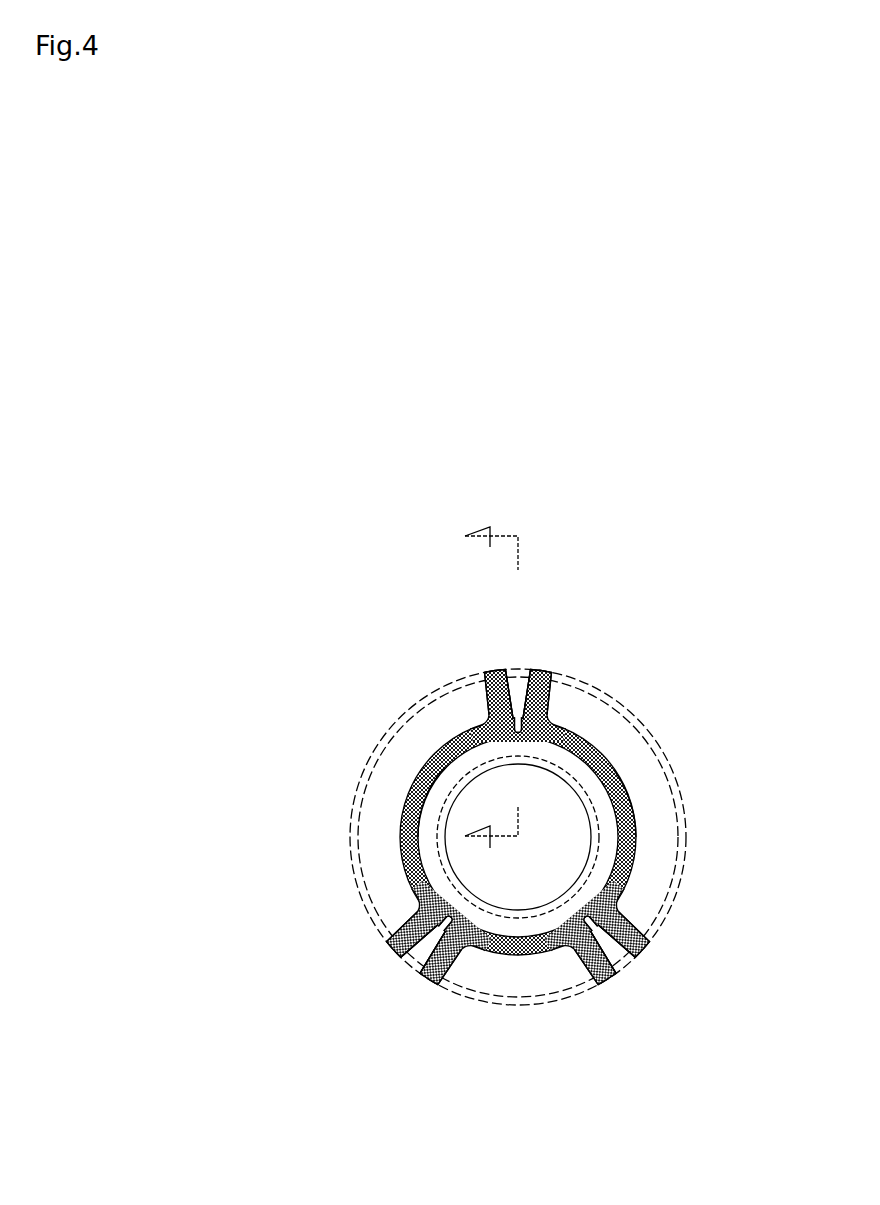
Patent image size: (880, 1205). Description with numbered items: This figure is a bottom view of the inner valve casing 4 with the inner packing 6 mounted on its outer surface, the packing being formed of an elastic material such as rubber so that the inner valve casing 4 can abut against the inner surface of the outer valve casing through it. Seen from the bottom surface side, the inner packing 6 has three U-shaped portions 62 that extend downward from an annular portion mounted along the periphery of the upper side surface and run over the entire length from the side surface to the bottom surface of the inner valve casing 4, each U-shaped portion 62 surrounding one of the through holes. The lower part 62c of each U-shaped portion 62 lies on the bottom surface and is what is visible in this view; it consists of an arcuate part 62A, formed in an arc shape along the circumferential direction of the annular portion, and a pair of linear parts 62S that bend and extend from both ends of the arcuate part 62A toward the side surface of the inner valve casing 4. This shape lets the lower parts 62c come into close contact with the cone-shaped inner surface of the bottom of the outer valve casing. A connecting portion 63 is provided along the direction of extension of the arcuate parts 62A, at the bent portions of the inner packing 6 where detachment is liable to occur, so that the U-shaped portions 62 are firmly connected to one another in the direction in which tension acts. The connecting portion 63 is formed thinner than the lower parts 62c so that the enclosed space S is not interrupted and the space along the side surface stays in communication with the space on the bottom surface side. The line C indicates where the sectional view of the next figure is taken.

The inner valve casing 4 is at (350, 852).
The inner packing 6 is at (526, 845).
The U-shaped portion 62 is at (400, 873).
The arcuate part 62A is at (638, 832).
The lower part 62c is at (400, 813).
The linear part 62S is at (550, 695).
The connecting portion 63 is at (485, 697).
The enclosed space S is at (517, 682).
The line C- C is at (506, 693).